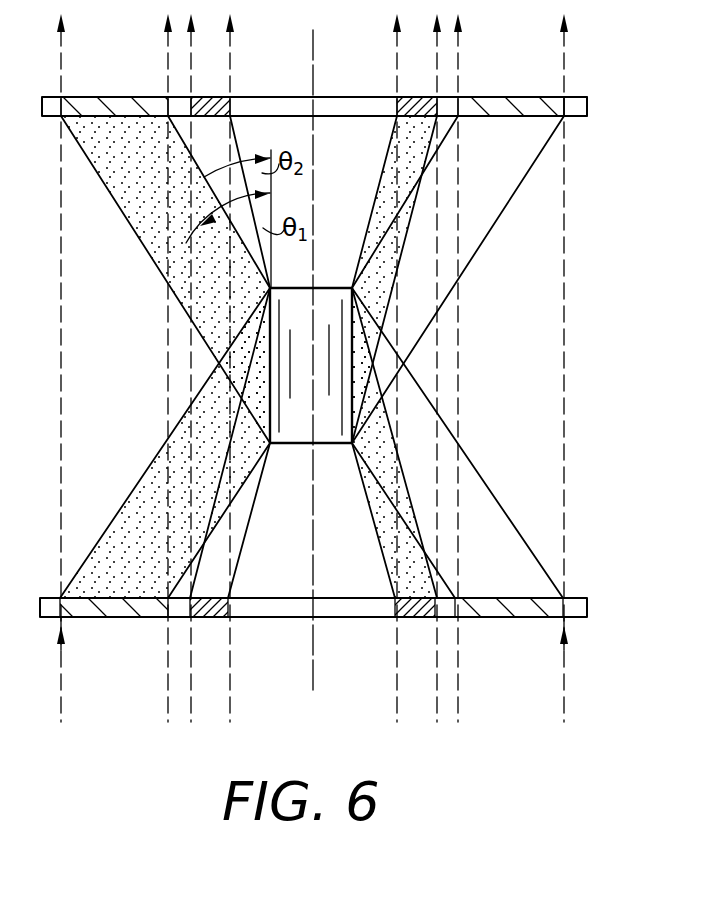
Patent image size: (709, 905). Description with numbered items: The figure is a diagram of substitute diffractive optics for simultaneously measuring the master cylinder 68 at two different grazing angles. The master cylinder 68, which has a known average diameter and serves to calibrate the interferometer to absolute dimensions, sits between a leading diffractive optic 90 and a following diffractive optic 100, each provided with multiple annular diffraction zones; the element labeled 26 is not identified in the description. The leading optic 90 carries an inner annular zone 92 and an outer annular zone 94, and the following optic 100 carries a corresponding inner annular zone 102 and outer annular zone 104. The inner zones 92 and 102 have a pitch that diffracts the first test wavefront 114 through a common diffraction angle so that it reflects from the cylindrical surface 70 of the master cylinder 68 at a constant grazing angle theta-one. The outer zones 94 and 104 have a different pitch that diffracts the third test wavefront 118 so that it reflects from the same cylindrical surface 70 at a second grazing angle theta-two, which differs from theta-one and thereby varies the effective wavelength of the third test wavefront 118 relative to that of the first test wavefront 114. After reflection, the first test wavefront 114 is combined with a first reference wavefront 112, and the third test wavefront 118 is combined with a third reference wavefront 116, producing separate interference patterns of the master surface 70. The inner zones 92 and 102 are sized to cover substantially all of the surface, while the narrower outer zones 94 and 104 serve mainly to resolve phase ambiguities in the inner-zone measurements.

The first plate 26 is at (313, 78).
The master cylinder 68 is at (326, 287).
The cylindrical surface 70 is at (295, 430).
The leading diffractive optic 90 is at (578, 595).
The inner annular zone 92 is at (215, 617).
The outer annular zone 94 is at (102, 617).
The following diffractive optic 100 is at (580, 120).
The inner annular zone 102 is at (412, 97).
The outer annular zone 104 is at (141, 97).
The first reference wavefront 112 is at (393, 328).
The first test wavefront 114 is at (388, 157).
The third reference wavefront 116 is at (167, 296).
The third test wavefront 118 is at (141, 240).